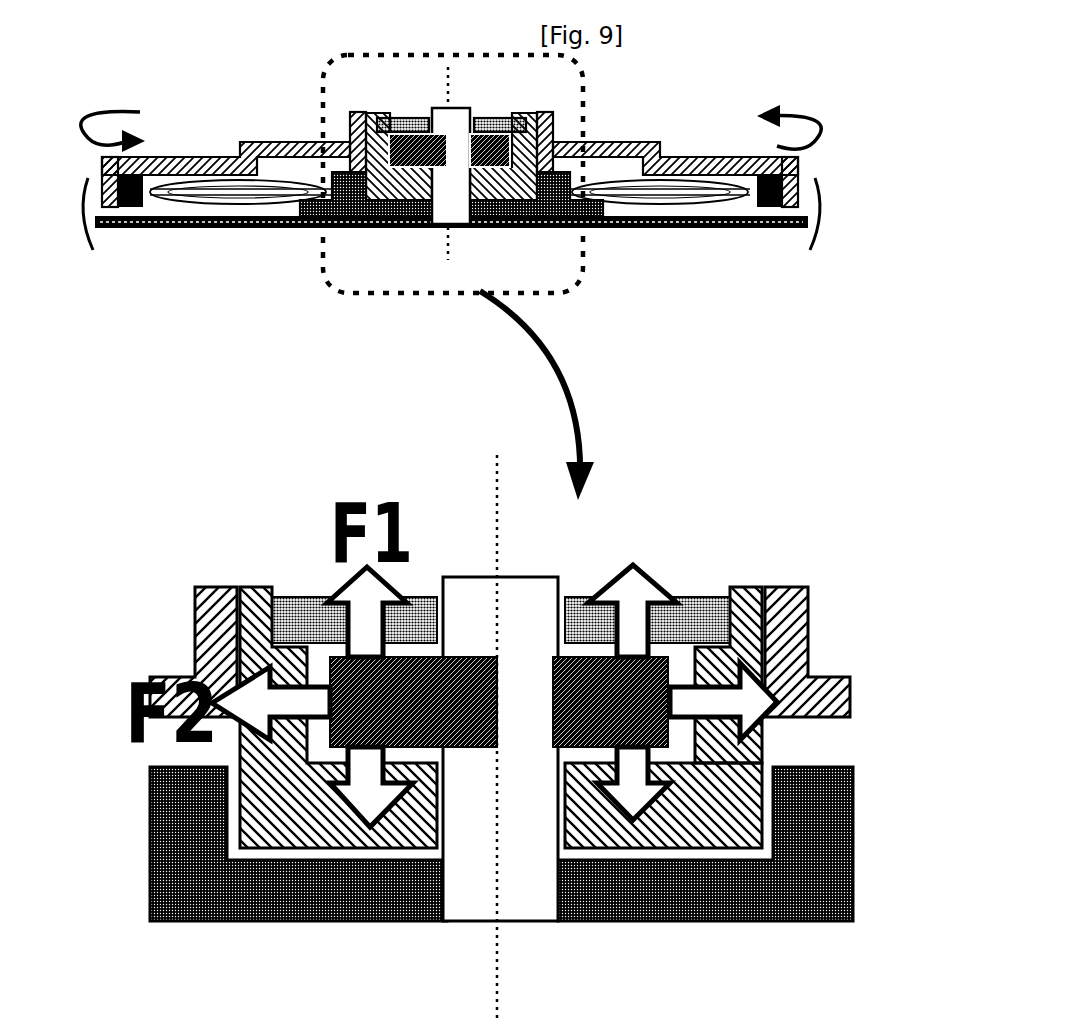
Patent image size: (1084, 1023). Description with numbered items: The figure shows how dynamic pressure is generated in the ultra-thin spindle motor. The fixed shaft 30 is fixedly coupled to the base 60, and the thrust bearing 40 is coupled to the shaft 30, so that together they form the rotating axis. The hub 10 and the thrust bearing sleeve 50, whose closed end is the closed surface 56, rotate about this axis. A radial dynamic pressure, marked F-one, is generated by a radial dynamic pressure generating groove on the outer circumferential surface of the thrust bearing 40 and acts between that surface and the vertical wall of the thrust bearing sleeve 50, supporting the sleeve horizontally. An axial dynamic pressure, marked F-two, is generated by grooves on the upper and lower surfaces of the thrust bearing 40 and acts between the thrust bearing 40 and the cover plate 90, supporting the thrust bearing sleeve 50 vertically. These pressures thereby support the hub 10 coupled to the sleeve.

The hub 10 is at (795, 642).
The fixed shaft 30 is at (542, 905).
The thrust bearing 40 is at (647, 643).
The thrust bearing sleeve 50 is at (292, 772).
The closed surface 56 is at (703, 847).
The base 60 is at (853, 887).
The cover plate 90 is at (690, 614).